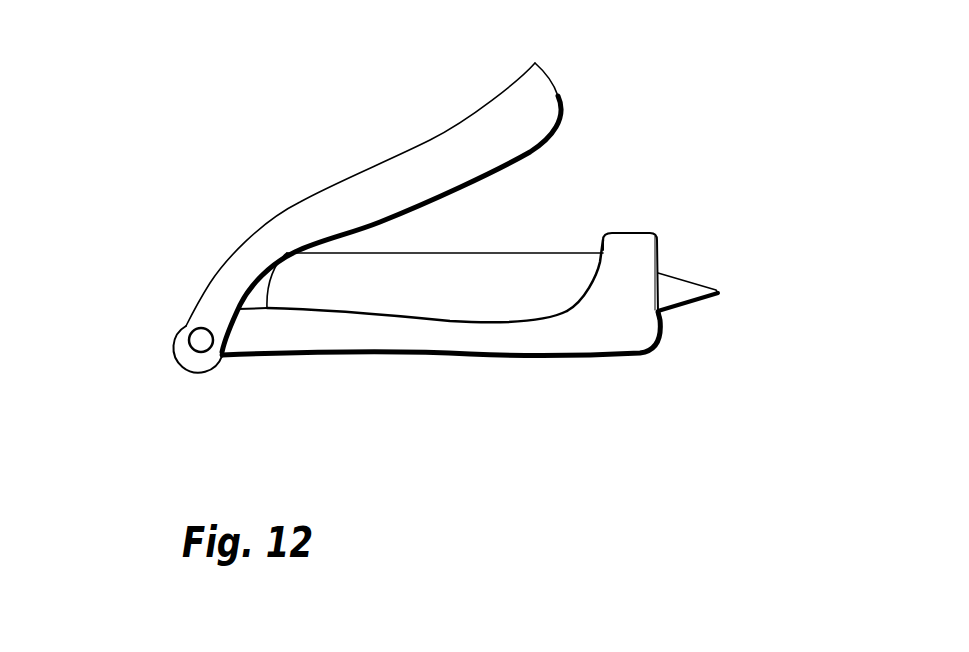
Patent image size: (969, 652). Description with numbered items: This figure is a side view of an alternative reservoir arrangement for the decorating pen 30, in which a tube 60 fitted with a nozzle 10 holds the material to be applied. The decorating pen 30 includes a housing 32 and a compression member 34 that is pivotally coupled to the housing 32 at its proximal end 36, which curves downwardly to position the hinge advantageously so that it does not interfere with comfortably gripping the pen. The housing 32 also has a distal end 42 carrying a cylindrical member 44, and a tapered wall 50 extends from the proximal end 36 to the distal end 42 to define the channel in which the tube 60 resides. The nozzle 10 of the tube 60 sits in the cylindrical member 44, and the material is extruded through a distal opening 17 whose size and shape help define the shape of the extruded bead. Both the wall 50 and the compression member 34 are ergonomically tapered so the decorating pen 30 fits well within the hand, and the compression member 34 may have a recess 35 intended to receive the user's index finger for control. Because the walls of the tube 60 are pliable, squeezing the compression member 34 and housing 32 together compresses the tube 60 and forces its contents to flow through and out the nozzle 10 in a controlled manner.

The nozzle 10 is at (698, 260).
The distal opening 17 is at (717, 300).
The decorating pen 30 is at (367, 375).
The housing 32 is at (478, 355).
The compression member 34 is at (367, 170).
The recess 35 is at (495, 102).
The proximal end 36 is at (220, 350).
The distal end 42 is at (642, 372).
The cylindrical member 44 is at (192, 332).
The tapered wall 50 is at (530, 333).
The tube 60 is at (477, 280).